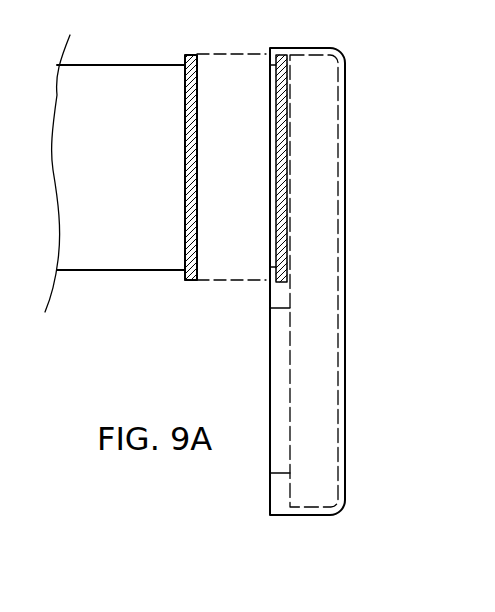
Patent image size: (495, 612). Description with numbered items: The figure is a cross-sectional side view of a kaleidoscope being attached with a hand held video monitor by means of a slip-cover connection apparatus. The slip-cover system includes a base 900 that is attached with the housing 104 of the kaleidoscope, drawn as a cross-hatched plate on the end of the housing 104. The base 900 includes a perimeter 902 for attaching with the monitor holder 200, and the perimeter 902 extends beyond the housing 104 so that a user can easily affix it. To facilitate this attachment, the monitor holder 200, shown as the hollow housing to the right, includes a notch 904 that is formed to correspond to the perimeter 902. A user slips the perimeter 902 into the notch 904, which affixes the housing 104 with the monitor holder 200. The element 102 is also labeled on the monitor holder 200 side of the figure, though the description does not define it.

The base 900 is at (185, 182).
The housing 104 is at (137, 270).
The perimeter 902 is at (187, 278).
The hatched strip / inner rail 102 is at (290, 193).
The notch 904 is at (278, 283).
The monitor holder 200 is at (345, 410).